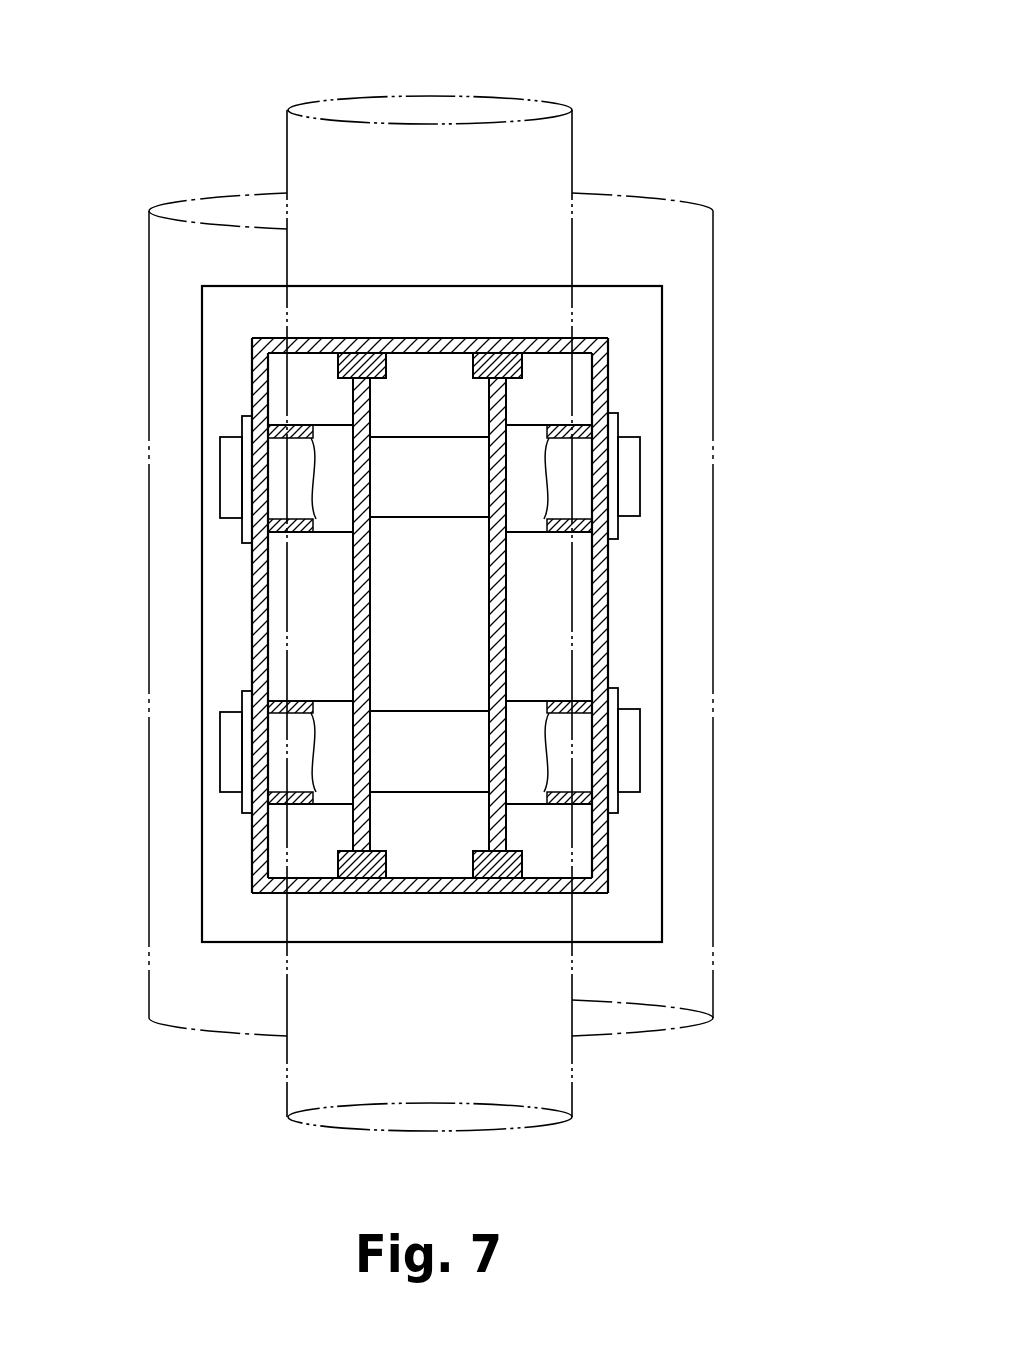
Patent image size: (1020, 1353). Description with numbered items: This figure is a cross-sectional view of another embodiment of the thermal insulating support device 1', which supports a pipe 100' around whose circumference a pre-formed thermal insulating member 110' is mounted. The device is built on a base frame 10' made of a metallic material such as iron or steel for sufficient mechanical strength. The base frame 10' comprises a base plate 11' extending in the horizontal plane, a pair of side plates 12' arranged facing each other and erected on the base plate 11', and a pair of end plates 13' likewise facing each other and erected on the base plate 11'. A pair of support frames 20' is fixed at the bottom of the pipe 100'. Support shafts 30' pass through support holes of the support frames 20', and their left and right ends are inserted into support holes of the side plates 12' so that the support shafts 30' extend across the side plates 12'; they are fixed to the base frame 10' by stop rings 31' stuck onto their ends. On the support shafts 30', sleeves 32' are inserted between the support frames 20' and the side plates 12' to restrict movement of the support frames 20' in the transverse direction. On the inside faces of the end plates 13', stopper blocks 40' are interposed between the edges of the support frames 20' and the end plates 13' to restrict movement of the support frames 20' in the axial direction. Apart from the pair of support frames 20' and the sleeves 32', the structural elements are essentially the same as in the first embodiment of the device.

The pipe 100' is at (429, 565).
The thermal insulating member 110' is at (430, 575).
The thermal insulating support device 1' is at (749, 214).
The base frame 10' is at (512, 614).
The base plate 11' is at (658, 1006).
The side plates 12' is at (431, 614).
The end plates 13' is at (433, 623).
The support frames 20' is at (437, 614).
The support shafts 30' is at (429, 614).
The stop rings 31' is at (432, 615).
The sleeves 32' is at (430, 614).
The stopper blocks 40' is at (431, 623).